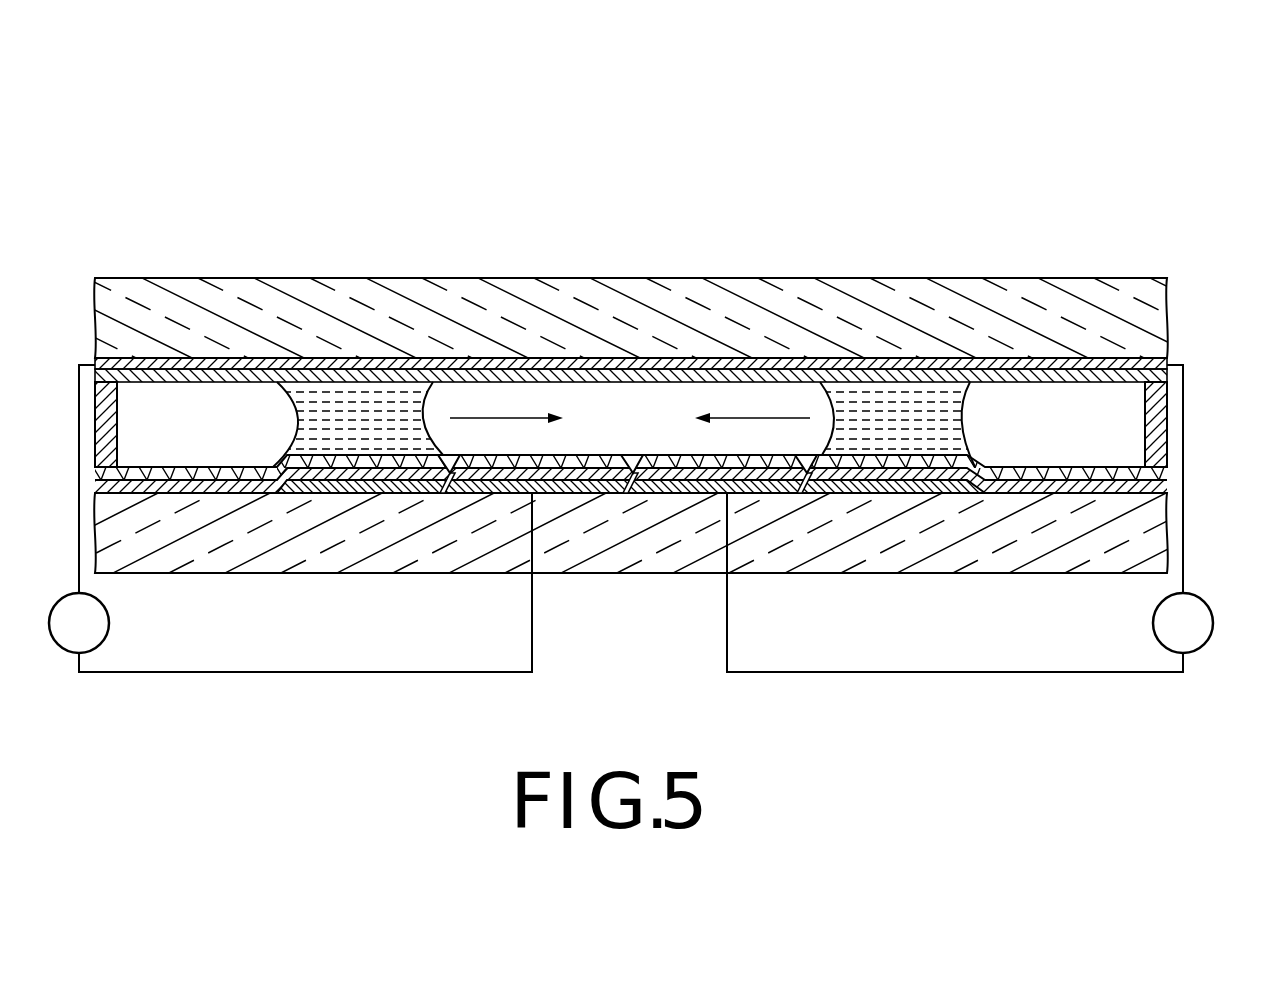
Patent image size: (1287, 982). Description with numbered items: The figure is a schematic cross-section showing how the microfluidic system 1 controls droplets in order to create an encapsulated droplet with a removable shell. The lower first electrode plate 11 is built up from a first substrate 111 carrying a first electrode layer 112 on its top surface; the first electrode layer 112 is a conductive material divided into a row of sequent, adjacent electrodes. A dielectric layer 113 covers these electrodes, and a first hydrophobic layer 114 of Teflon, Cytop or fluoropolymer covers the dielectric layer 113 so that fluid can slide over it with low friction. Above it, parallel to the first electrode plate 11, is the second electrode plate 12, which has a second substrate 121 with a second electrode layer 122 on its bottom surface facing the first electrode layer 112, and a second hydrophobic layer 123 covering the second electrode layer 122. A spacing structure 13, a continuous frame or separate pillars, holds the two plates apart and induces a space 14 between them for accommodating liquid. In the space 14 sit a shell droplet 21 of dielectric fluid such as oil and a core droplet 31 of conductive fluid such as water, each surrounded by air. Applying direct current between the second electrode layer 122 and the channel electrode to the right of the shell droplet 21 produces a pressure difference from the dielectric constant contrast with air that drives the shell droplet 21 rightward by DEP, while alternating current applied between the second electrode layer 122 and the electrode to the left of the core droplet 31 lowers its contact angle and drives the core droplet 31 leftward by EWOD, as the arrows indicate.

The microfluidic system 1 is at (185, 160).
The first electrode plate 11 is at (1167, 540).
The first substrate 111 is at (683, 553).
The first electrode layer 112 is at (575, 493).
The dielectric layer 113 is at (1167, 490).
The first hydrophobic layer 114 is at (1167, 473).
The second electrode plate 12 is at (1167, 323).
The second substrate 121 is at (973, 313).
The second electrode layer 122 is at (664, 362).
The second hydrophobic layer 123 is at (519, 372).
The spacing structure 13 is at (1167, 398).
The space 14 is at (208, 436).
The shell droplet 21 is at (372, 407).
The core droplet 31 is at (897, 400).